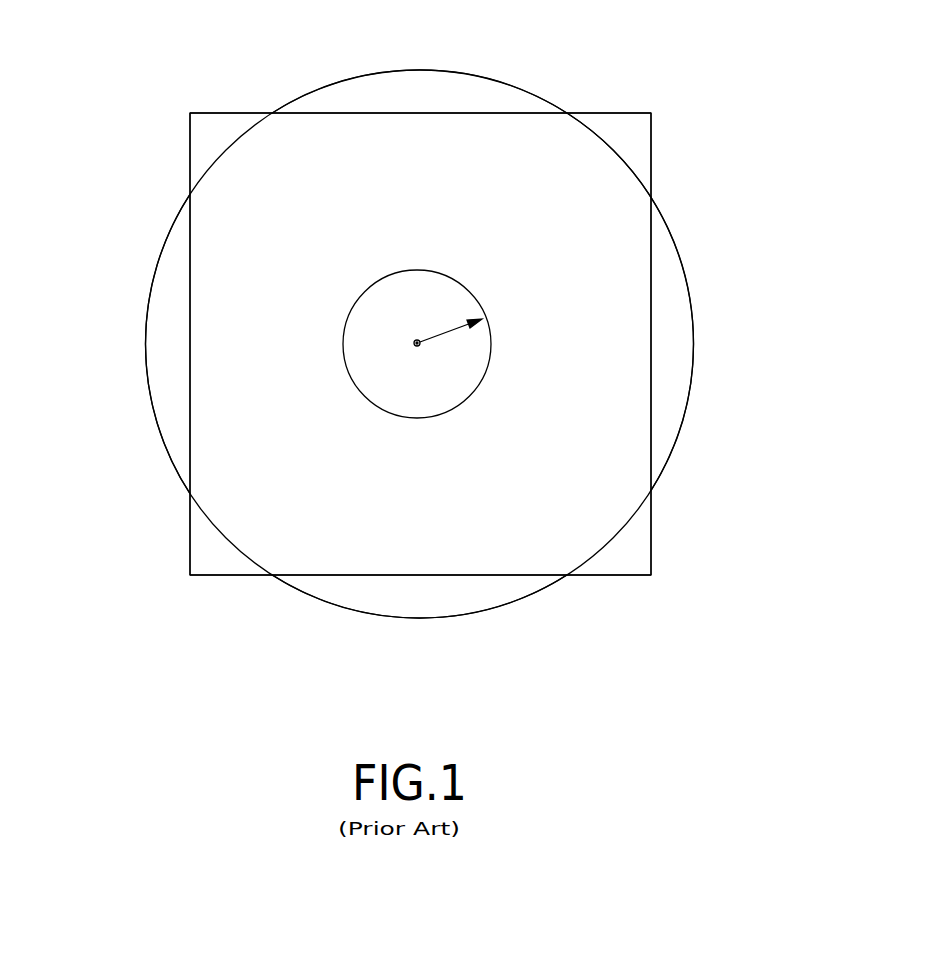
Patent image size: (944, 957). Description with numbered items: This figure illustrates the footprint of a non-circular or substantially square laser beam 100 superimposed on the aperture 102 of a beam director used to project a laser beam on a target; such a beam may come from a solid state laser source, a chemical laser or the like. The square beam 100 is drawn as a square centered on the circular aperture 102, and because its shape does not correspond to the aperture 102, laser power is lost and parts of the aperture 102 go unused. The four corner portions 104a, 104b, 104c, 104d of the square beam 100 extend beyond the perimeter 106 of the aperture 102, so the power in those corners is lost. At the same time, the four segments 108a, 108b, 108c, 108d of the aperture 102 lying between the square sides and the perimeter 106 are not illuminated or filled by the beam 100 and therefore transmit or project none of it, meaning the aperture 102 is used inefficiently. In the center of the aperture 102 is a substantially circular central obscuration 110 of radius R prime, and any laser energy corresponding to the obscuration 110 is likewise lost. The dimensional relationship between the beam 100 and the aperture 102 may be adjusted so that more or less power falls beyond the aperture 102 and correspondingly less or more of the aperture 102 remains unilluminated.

The non-circular or substantially square laser beam 100 is at (636, 108).
The aperture 102 is at (702, 313).
The corner portion 104a is at (211, 113).
The corner portion 104b is at (651, 148).
The corner portion 104c is at (651, 545).
The corner portion 104d is at (190, 538).
The perimeter 106 is at (637, 173).
The segment 108a is at (692, 385).
The segment 108b is at (398, 618).
The segment 108c is at (146, 350).
The segment 108d is at (417, 70).
The central obscuration 110 is at (433, 271).